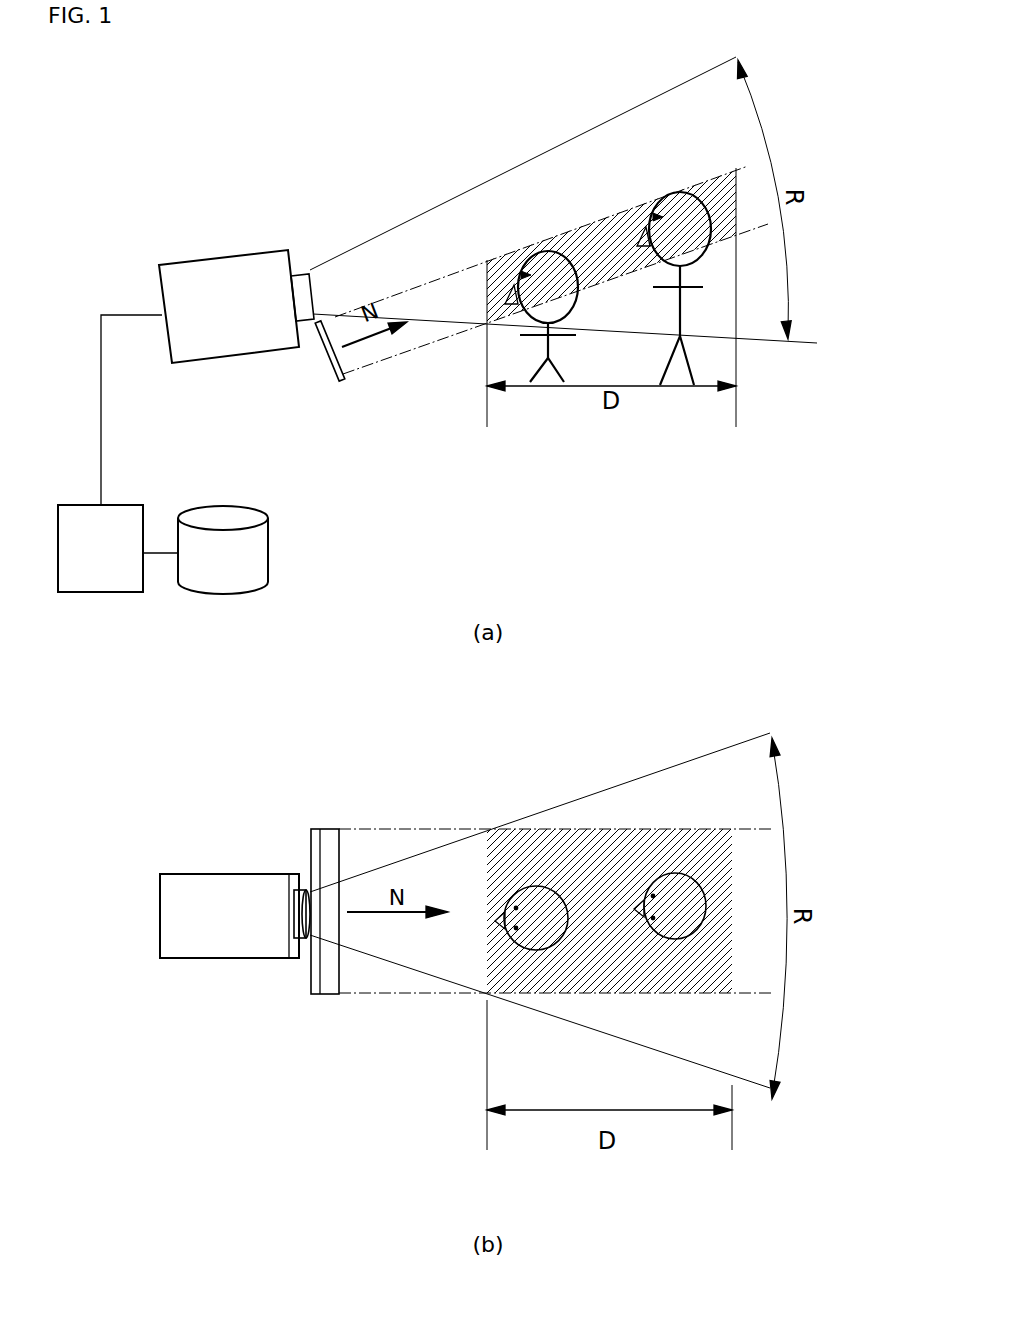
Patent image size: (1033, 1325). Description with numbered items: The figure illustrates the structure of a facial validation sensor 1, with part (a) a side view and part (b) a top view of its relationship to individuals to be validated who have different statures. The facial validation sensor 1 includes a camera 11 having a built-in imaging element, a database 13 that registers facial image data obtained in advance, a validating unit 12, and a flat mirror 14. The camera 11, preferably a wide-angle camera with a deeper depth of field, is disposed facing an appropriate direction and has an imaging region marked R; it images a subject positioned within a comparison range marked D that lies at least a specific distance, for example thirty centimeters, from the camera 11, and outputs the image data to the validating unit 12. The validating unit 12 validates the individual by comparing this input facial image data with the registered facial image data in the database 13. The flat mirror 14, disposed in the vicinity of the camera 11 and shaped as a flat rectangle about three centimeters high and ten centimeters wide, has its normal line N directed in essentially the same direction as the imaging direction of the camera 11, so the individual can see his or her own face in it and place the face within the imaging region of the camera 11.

The facial validation sensor 1 is at (202, 143).
The camera 11 is at (210, 259).
The validating unit 12 is at (101, 592).
The database 13 is at (222, 593).
The flat mirror 14 is at (342, 382).